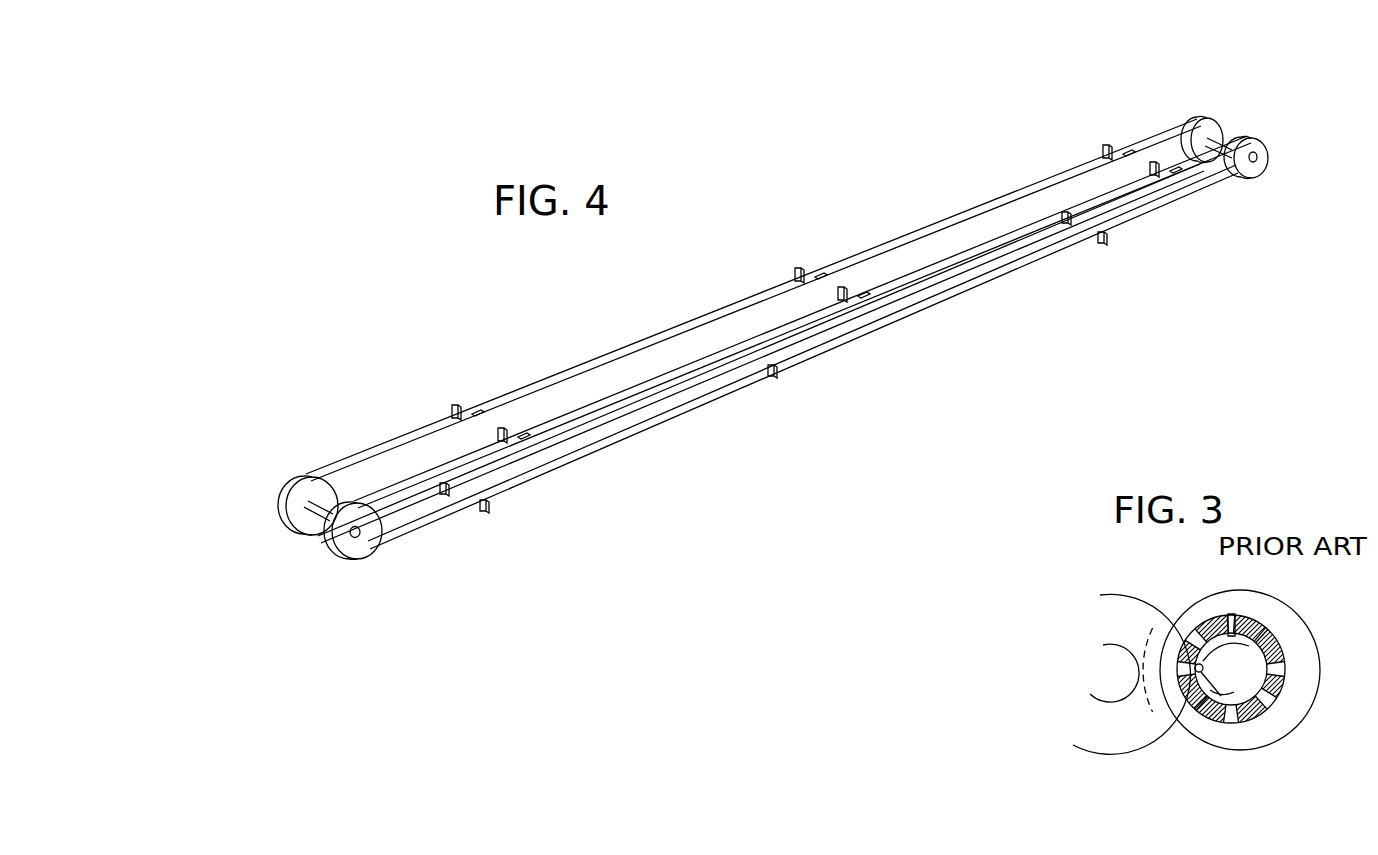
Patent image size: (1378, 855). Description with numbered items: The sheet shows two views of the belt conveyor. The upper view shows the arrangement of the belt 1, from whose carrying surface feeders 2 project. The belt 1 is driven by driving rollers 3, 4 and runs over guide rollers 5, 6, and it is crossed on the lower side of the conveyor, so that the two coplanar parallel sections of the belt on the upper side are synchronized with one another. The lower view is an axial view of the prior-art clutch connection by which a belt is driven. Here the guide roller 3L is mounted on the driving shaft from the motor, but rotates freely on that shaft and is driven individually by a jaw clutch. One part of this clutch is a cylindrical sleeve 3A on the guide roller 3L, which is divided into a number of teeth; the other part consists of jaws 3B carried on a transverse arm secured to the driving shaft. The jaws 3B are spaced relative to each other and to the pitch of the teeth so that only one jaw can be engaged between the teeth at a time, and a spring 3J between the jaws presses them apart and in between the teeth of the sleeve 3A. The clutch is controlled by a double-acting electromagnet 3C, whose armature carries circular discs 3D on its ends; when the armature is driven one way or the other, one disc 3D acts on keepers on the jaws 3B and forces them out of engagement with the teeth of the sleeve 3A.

In FIG. 4, the belt 1 is at (975, 207).
In FIG. 4, the feeders 2 is at (797, 268).
In FIG. 4, the driving roller 3 is at (337, 547).
In FIG. 4, the driving roller 4 is at (305, 488).
In FIG. 4, the guide roller 5 is at (1248, 138).
In FIG. 4, the guide roller 6 is at (1200, 120).
In FIG. 3, the cylindrical sleeve 3A is at (1213, 622).
In FIG. 3, the jaws 3B is at (1222, 699).
In FIG. 3, the double-acting electromagnet 3C is at (1120, 687).
In FIG. 3, the circular discs 3D is at (1104, 745).
In FIG. 3, the spring 3J is at (1203, 668).
In FIG. 3, the guide roller 3L is at (1288, 735).